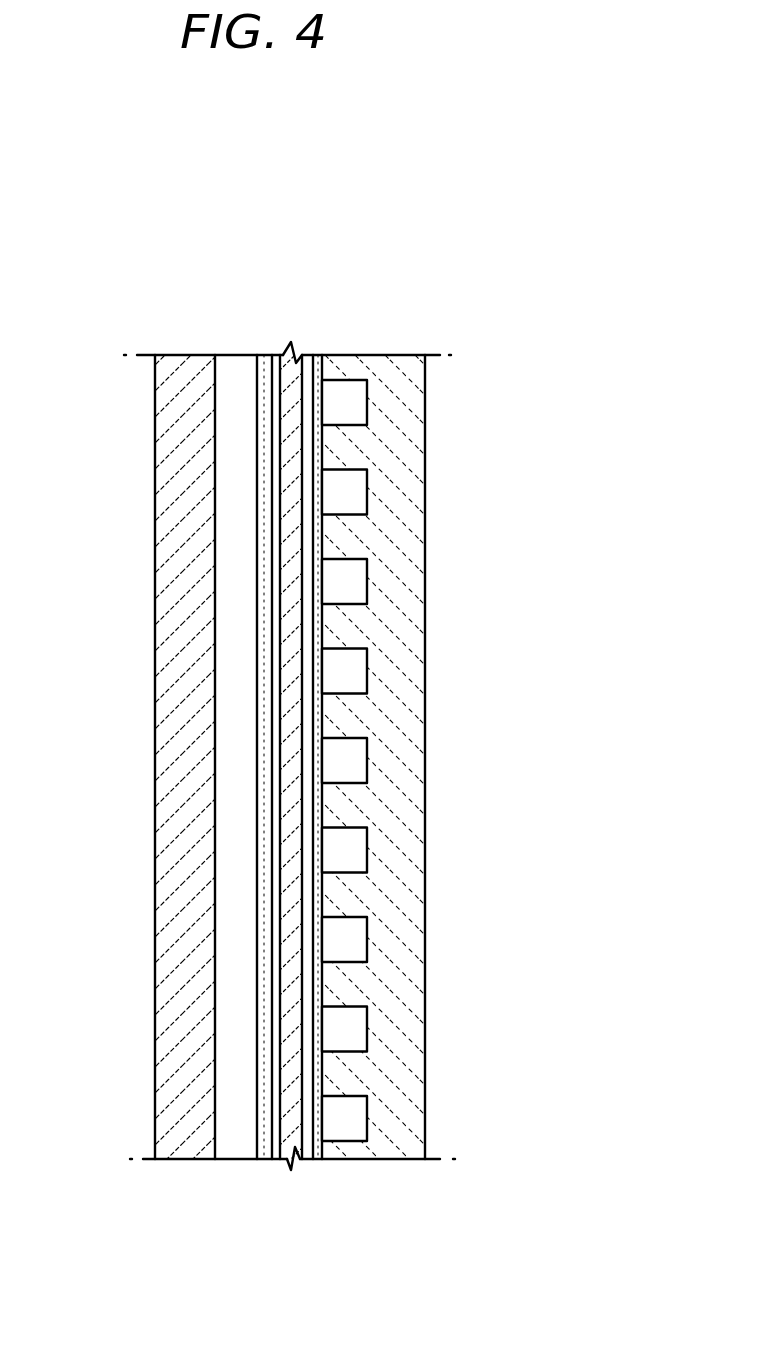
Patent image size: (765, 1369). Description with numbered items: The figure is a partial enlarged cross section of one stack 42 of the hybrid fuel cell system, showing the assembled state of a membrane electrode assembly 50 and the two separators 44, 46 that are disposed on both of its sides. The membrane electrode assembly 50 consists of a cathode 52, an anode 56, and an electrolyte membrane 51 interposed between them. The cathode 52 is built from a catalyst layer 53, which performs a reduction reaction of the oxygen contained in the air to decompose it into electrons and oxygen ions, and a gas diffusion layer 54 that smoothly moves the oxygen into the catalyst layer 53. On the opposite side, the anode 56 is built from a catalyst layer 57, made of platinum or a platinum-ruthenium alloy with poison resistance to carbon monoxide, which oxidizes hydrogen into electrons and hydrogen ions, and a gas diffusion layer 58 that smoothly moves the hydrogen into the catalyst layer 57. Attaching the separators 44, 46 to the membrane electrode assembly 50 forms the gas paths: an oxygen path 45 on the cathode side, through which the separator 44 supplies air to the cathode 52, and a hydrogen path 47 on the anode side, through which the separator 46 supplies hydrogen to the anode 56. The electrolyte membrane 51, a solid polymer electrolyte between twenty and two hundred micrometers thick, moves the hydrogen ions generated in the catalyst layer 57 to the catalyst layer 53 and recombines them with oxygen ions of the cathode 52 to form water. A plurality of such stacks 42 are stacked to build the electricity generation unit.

The stack 42 is at (499, 378).
The separator 44 is at (149, 962).
The oxygen path 45 is at (233, 685).
The separator 46 is at (426, 757).
The hydrogen path 47 is at (352, 493).
The membrane electrode assembly 50 is at (351, 849).
The electrolyte membrane 51 is at (290, 1020).
The cathode 52 is at (250, 821).
The catalyst layer 53 is at (277, 1160).
The gas diffusion layer 54 is at (265, 1159).
The anode 56 is at (338, 821).
The catalyst layer 57 is at (310, 1160).
The gas diffusion layer 58 is at (320, 1160).